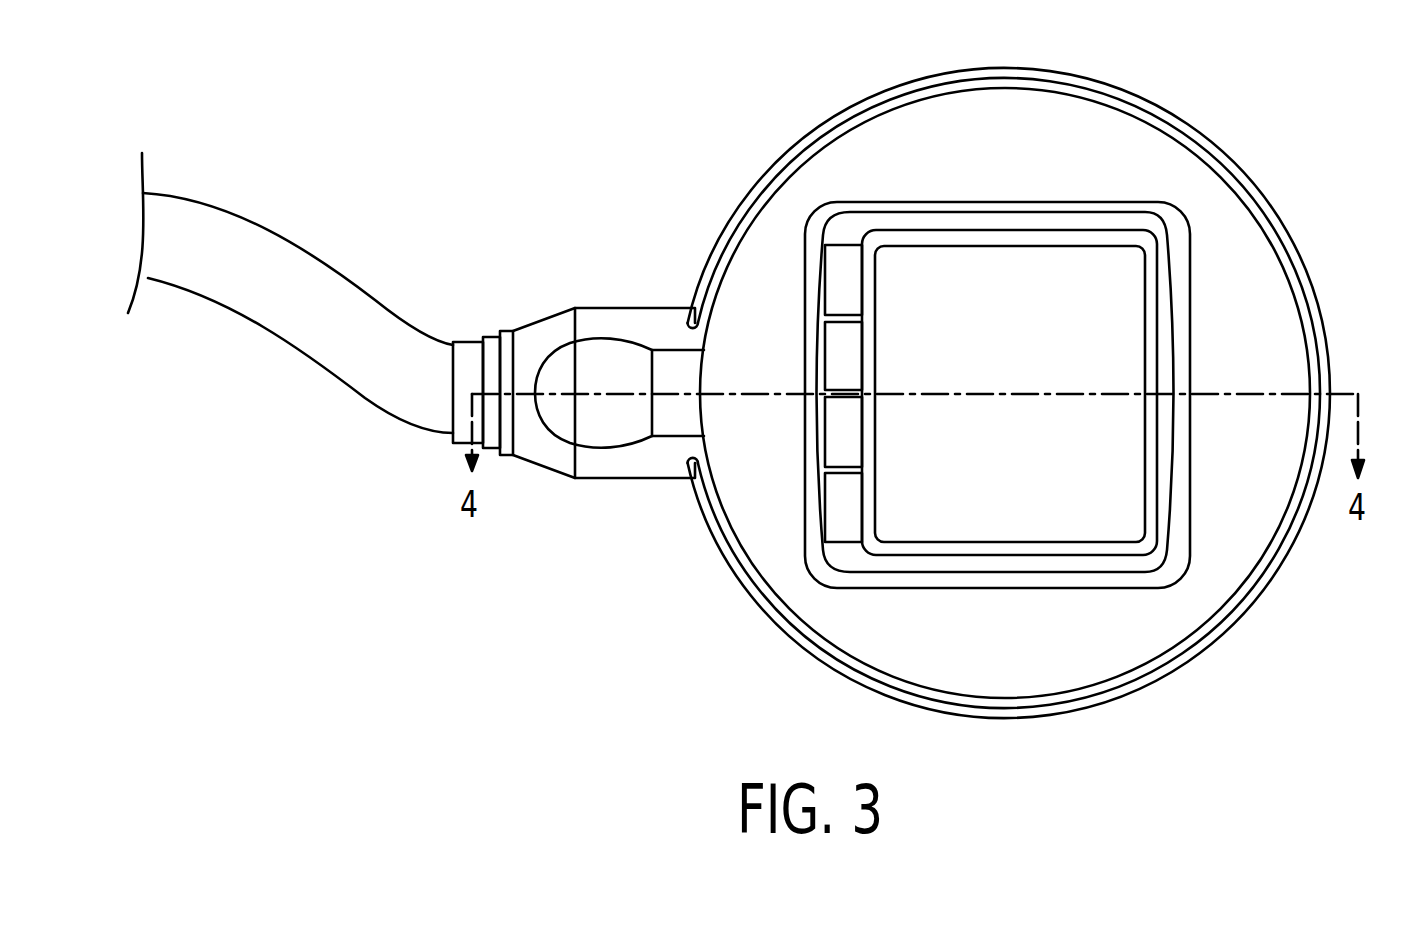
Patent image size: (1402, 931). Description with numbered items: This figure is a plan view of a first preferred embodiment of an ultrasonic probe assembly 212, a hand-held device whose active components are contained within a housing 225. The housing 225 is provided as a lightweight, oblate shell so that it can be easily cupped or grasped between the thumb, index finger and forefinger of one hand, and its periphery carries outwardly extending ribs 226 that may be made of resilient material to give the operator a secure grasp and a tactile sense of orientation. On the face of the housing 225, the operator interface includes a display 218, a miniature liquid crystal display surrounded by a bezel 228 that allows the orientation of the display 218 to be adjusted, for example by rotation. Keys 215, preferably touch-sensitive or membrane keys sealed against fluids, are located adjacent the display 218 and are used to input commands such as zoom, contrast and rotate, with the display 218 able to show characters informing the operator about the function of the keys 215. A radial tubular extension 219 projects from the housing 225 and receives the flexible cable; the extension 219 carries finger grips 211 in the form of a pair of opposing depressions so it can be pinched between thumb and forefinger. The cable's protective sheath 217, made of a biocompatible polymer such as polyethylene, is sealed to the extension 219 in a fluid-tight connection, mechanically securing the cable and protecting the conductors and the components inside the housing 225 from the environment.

The finger grips 211 is at (613, 358).
The ultrasonic probe assembly 212 is at (588, 632).
The keys 215 is at (838, 286).
The protective sheath 217 is at (313, 265).
The display 218 is at (1013, 313).
The radial tubular extension 219 is at (600, 480).
The housing 225 is at (1010, 660).
The outwardly extending ribs 226 is at (1183, 122).
The bezel 228 is at (1168, 343).